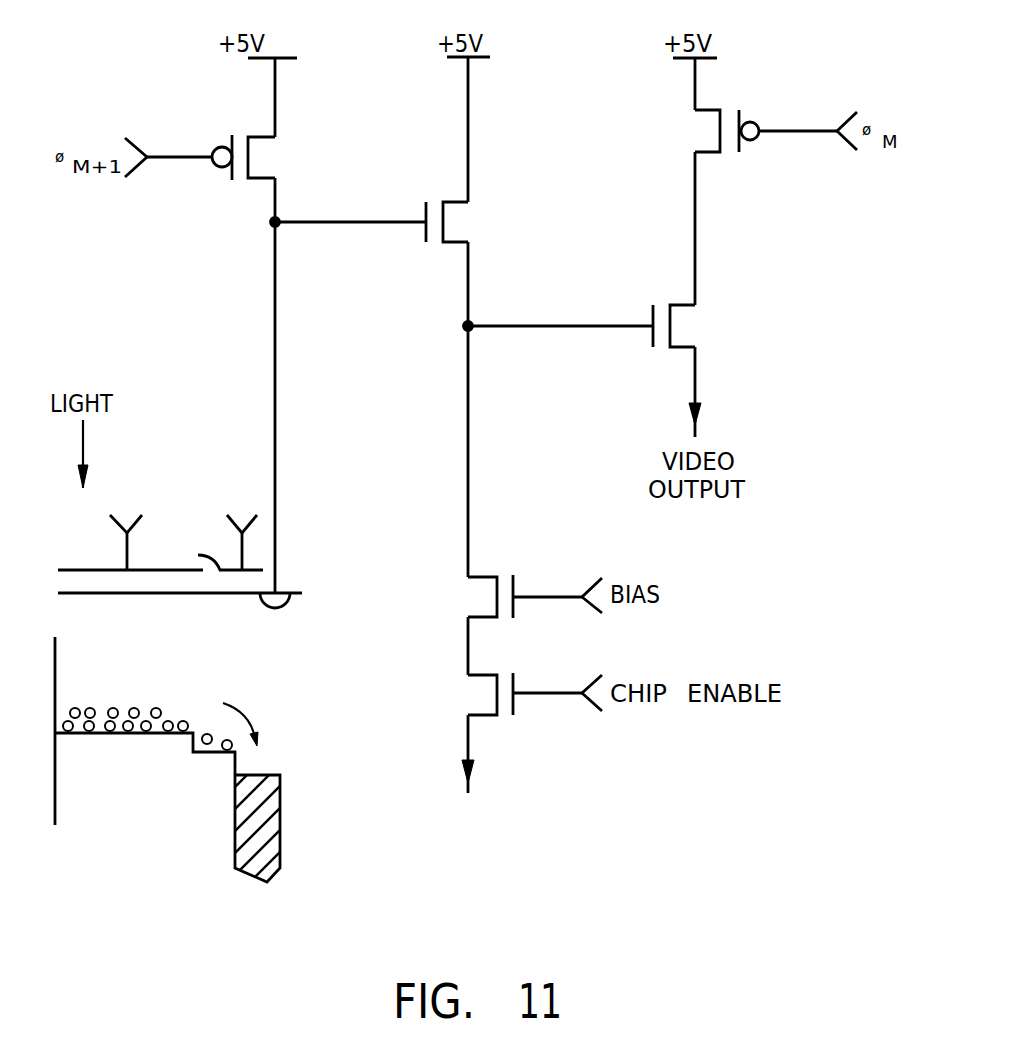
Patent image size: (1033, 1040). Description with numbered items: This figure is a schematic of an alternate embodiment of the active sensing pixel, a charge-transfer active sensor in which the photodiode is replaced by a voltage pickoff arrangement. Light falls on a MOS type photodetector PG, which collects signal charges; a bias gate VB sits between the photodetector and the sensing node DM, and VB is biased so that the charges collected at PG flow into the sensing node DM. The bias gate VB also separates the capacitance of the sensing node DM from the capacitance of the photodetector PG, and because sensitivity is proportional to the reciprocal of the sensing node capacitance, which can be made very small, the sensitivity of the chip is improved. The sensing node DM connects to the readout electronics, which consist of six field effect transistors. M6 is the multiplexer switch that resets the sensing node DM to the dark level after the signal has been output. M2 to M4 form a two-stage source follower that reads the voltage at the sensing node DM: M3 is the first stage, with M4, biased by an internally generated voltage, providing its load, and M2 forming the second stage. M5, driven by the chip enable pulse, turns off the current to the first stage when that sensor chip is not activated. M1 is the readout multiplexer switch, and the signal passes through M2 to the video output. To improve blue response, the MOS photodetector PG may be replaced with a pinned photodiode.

The readout multiplexer switch M1 is at (756, 131).
The source follower transistor M2 is at (693, 326).
The source follower transistor M3 is at (467, 222).
The source follower load transistor M4 is at (517, 596).
The chip enable transistor M5 is at (517, 694).
The reset multiplexer switch M6 is at (219, 157).
The MOS type photodetector PG is at (130, 528).
The bias gate VB is at (230, 528).
The sensing node DM is at (276, 622).